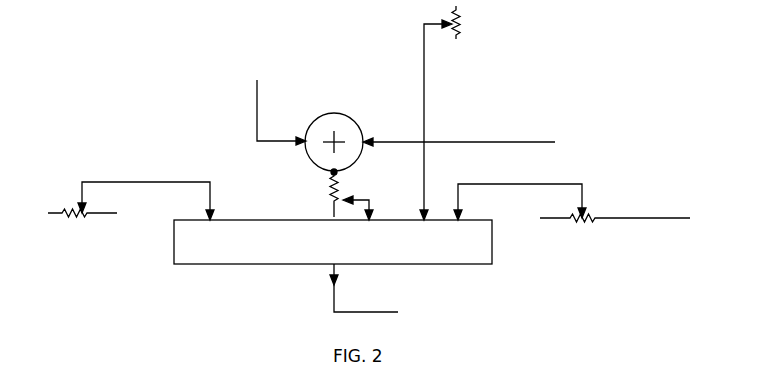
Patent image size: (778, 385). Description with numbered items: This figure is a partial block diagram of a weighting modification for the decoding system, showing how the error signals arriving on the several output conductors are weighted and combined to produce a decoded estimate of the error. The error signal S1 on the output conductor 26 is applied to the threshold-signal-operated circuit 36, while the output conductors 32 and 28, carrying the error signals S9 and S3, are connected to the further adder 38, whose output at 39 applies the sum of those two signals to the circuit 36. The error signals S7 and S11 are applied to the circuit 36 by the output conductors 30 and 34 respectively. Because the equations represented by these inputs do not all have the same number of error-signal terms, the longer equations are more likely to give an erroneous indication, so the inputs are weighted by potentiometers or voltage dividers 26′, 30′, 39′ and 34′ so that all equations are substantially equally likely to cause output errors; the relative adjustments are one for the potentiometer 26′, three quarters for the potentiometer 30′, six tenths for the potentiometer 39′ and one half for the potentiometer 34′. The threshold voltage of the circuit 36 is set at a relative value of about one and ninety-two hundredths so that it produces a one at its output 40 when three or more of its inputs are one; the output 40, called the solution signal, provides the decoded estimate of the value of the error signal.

The output conductor 26 is at (615, 235).
The potentiometer 26' is at (528, 220).
The output conductor 28 is at (508, 141).
The output conductor 30 is at (449, 120).
The potentiometer 30' is at (480, 22).
The output conductor 32 is at (257, 124).
The output conductor 34 is at (68, 230).
The potentiometer 34' is at (146, 217).
The threshold-signal-operated circuit 36 is at (493, 242).
The further adder 38 is at (352, 117).
The output of the further adder 39 is at (377, 204).
The potentiometer 39' is at (312, 193).
The output 40 is at (370, 310).